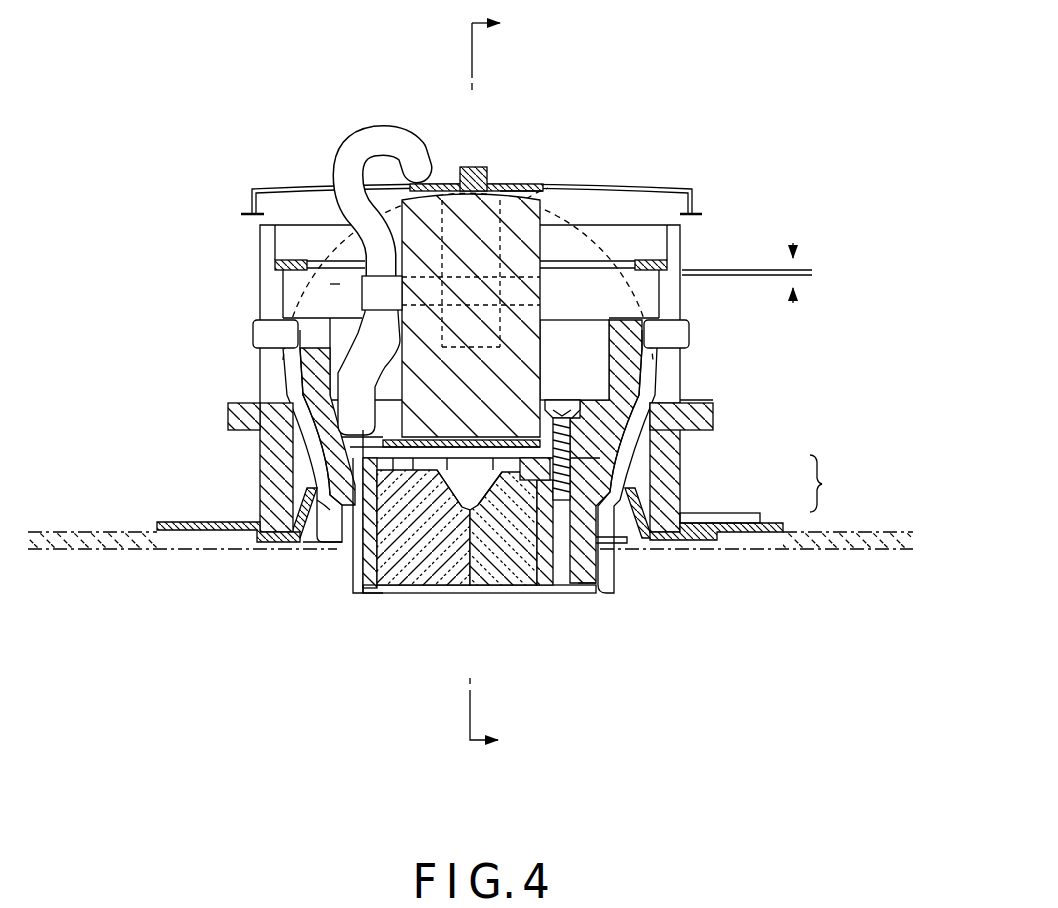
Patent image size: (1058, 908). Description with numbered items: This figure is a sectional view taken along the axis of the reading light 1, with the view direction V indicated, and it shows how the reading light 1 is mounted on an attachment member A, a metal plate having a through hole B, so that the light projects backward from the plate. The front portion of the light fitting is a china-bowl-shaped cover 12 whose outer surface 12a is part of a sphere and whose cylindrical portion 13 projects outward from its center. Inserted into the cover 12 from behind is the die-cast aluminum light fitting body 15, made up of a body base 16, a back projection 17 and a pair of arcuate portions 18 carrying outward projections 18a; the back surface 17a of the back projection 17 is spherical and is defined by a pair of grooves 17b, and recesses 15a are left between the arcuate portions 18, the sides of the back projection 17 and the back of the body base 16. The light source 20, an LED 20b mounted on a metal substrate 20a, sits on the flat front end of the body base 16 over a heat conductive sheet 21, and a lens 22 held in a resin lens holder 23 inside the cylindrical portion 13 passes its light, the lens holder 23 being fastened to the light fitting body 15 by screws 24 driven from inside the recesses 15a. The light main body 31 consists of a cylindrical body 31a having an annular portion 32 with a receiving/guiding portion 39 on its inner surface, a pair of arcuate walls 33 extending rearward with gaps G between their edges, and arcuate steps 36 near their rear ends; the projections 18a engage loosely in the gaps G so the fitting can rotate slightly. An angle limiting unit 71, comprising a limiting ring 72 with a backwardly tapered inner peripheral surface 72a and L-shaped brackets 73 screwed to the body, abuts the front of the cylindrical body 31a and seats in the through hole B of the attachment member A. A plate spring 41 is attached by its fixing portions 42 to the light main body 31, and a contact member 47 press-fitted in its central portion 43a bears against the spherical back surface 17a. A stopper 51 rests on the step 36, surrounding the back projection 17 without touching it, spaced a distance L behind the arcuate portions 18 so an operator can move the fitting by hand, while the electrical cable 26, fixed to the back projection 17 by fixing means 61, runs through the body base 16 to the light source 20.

The reading light 1 is at (733, 403).
The cover 12 is at (604, 520).
The outer surface 12a is at (300, 490).
The cylindrical portion 13 is at (358, 595).
The light fitting body 15 is at (290, 310).
The recesses 15a is at (560, 345).
The body base 16 is at (292, 370).
The back projection 17 is at (540, 243).
The back surface 17a is at (518, 188).
The grooves 17b is at (552, 193).
The arcuate portions 18 is at (352, 290).
The projections 18a is at (263, 337).
The light source 20 is at (495, 633).
The metal substrate 20a is at (418, 478).
The LED 20b is at (470, 482).
The heat conductive sheet 21 is at (455, 440).
The lens 22 is at (543, 570).
The lens holder 23 is at (576, 593).
The screws 24 is at (570, 400).
The electrical cable 26 is at (355, 140).
The light main body 31 is at (246, 394).
The cylindrical body 31a is at (262, 430).
The annular portion 32 is at (228, 415).
The arcuate walls 33 is at (262, 240).
The arcuate steps 36 is at (682, 274).
The receiving/guiding portion 39 is at (680, 465).
The spring 41 is at (621, 184).
The fixing portions 42 is at (247, 212).
The central portion 43a is at (432, 184).
The contact member 47 is at (477, 167).
The stopper 51 is at (270, 262).
The fixing means 61 is at (330, 284).
The angle limiting unit 71 is at (831, 483).
The limiting ring 72 is at (700, 510).
The inner peripheral surface 72a is at (320, 498).
The brackets 73 is at (690, 463).
The attachment member A is at (866, 540).
The through hole B is at (727, 540).
The gaps G is at (270, 290).
The distance L is at (803, 271).
The view direction V is at (503, 386).